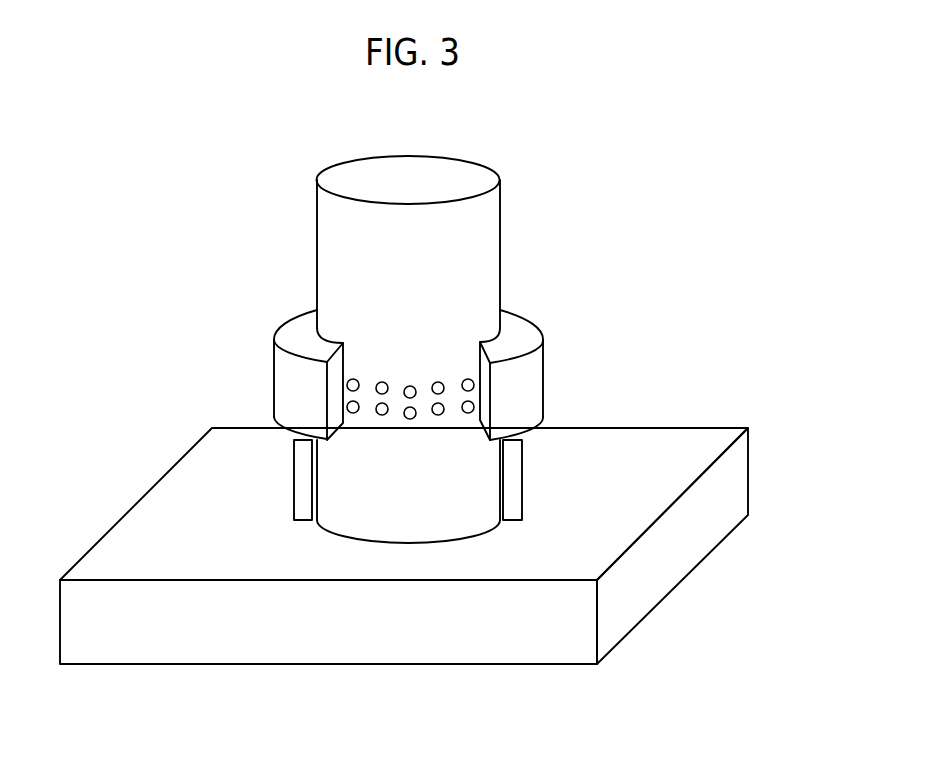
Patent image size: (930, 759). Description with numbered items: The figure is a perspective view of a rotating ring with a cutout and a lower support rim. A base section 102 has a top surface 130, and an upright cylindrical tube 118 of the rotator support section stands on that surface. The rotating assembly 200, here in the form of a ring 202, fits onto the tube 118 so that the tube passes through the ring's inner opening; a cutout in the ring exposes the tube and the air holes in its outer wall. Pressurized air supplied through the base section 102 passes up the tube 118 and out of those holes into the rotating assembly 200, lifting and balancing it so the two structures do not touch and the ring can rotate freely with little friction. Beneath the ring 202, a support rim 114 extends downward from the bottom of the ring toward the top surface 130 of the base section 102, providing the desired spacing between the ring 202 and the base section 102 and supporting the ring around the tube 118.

The base section 102 is at (622, 608).
The support rim 114 is at (303, 467).
The upright cylindrical tube 118 is at (500, 235).
The top surface 130 is at (588, 505).
The rotating assembly 200 is at (620, 383).
The ring 202 is at (522, 337).